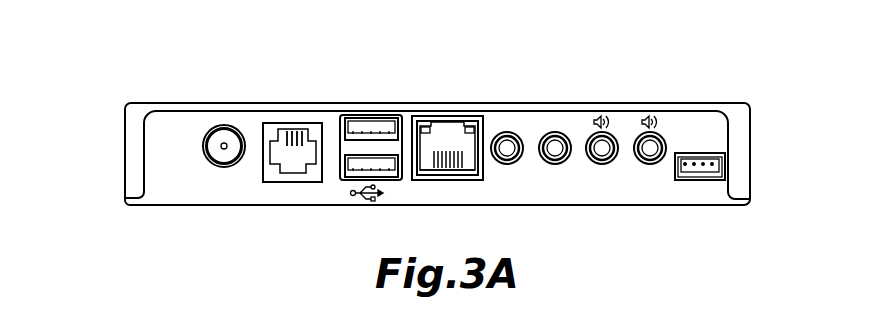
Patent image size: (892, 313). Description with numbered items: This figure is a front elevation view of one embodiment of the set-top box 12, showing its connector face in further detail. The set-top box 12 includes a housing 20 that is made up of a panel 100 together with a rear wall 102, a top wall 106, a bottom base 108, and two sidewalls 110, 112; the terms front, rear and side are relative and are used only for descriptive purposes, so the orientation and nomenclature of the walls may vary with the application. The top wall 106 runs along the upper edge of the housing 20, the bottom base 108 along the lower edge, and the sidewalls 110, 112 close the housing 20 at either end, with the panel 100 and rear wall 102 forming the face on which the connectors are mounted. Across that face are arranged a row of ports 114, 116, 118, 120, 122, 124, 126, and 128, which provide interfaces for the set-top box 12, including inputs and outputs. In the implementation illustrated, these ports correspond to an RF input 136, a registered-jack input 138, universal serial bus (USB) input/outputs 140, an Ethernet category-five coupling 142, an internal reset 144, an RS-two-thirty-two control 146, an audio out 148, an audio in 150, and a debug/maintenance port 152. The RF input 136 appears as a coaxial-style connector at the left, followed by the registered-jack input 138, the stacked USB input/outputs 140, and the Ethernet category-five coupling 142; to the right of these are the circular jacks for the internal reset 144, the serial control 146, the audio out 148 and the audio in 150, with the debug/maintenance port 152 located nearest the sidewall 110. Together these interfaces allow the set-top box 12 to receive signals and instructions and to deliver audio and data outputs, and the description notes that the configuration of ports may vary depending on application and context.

The set-top box 12 is at (129, 91).
The housing 20 is at (143, 205).
The panel 100 is at (730, 104).
The rear wall 102 is at (182, 197).
The top wall 106 is at (193, 103).
The bottom base 108 is at (312, 205).
The sidewall 110 is at (750, 144).
The sidewall 112 is at (125, 146).
The port 114 is at (226, 126).
The port 116 is at (296, 123).
The port 118 is at (372, 116).
The port 120 is at (451, 116).
The port 122 is at (508, 132).
The port 124 is at (556, 132).
The port 126 is at (603, 132).
The port 128 is at (651, 132).
The RF input 136 is at (224, 168).
The RJ-45 input 138 is at (273, 182).
The universal serial bus (USB) input/outputs 140 is at (370, 178).
The Ethernet category 5 (Cat 5) coupling 142 is at (452, 178).
The internal reset 144 is at (507, 164).
The RS232 control 146 is at (556, 164).
The audio out 148 is at (603, 164).
The audio in 150 is at (651, 164).
The debug/maintenance port 152 is at (700, 180).